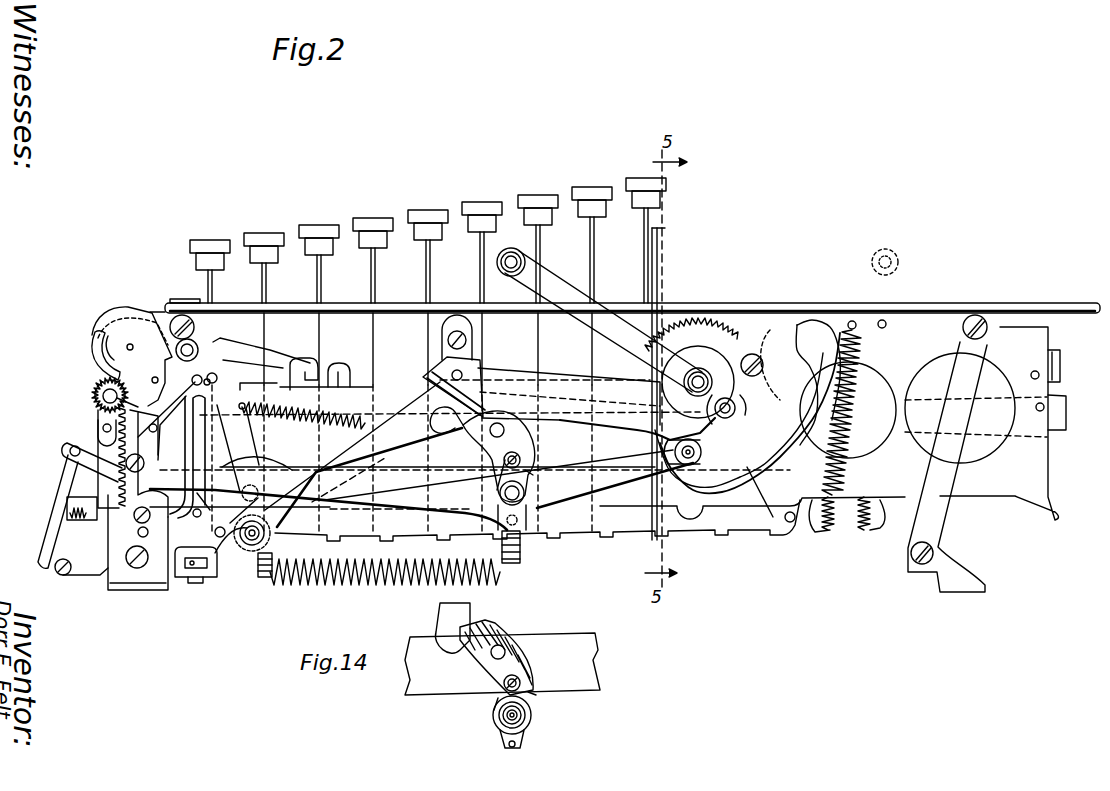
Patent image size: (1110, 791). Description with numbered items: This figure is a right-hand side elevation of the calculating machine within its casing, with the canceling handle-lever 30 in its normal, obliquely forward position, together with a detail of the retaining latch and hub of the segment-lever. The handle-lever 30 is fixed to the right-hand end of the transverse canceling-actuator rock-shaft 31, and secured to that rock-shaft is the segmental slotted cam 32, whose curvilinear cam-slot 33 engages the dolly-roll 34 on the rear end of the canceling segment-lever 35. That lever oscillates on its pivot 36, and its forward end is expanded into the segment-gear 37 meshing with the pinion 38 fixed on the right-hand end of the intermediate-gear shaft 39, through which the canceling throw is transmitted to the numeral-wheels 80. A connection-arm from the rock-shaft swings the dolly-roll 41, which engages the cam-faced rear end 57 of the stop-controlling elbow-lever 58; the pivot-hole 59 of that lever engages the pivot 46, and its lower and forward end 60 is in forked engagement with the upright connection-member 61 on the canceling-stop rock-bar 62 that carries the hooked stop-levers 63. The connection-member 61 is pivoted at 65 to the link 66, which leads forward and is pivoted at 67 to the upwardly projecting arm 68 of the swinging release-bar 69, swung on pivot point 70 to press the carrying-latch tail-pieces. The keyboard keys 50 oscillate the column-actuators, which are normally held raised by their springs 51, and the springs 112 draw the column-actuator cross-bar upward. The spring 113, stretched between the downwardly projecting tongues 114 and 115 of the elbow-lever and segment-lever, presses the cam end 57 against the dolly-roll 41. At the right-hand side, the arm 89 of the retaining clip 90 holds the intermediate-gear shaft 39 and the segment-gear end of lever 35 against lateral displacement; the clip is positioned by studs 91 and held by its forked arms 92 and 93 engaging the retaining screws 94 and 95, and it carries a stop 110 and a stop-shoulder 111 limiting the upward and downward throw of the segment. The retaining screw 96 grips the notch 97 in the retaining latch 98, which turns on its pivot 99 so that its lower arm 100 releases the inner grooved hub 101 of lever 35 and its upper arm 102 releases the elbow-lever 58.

In FIG. 2, the canceling-actuator handle-lever 30 is at (513, 255).
In FIG. 2, the canceling-actuator rock-shaft 31 is at (691, 334).
In FIG. 2, the segmental slotted cam 32 is at (747, 413).
In FIG. 2, the curvilinear cam-slot 33 is at (812, 335).
In FIG. 2, the dolly-roll 34 is at (697, 452).
In FIG. 2, the canceling segment-lever 35 is at (666, 470).
In FIG. 2, the pivot 36 is at (515, 520).
In FIG. 14, the pivot 36 is at (520, 722).
In FIG. 2, the segment-gear 37 is at (120, 407).
In FIG. 2, the pinion 38 is at (97, 388).
In FIG. 2, the intermediate-gear shaft 39 is at (100, 395).
In FIG. 2, the dolly-roll 41 is at (740, 395).
In FIG. 2, the pivot 46 is at (455, 372).
In FIG. 2, the keyboard keys 50 is at (332, 225).
In FIG. 2, the column-actuator springs 51 is at (848, 505).
In FIG. 2, the cam-faced rear end 57 is at (740, 415).
In FIG. 2, the stop-controlling elbow-lever 58 is at (560, 372).
In FIG. 2, the pivot-hole 59 is at (470, 382).
In FIG. 2, the lower and forward end 60 is at (262, 545).
In FIG. 2, the upright connection-member 61 is at (232, 548).
In FIG. 2, the canceling-stop rock-bar 62 is at (193, 568).
In FIG. 2, the hooked stop-levers 63 is at (218, 430).
In FIG. 2, the pivotal connection 65 is at (196, 515).
In FIG. 2, the link 66 is at (190, 502).
In FIG. 2, the pivotal connection 67 is at (92, 462).
In FIG. 2, the upwardly projecting arm 68 is at (62, 470).
In FIG. 2, the swinging release-bar 69 is at (58, 565).
In FIG. 2, the pivot point 70 is at (58, 505).
In FIG. 2, the numeral-wheels 80 is at (96, 345).
In FIG. 2, the arm 89 is at (145, 393).
In FIG. 2, the retaining clip 90 is at (192, 428).
In FIG. 2, the studs 91 is at (174, 466).
In FIG. 2, the forked arm 92 is at (200, 340).
In FIG. 2, the forked arm 93 is at (131, 532).
In FIG. 2, the retaining screw 94 is at (185, 300).
In FIG. 2, the retaining screw 95 is at (132, 520).
In FIG. 2, the retaining screw 96 is at (524, 458).
In FIG. 14, the retaining screw 96 is at (520, 684).
In FIG. 2, the notch 97 is at (505, 460).
In FIG. 14, the notch 97 is at (508, 688).
In FIG. 2, the retaining latch 98 is at (493, 456).
In FIG. 14, the retaining latch 98 is at (492, 657).
In FIG. 2, the pivot 99 is at (505, 430).
In FIG. 14, the pivot 99 is at (506, 652).
In FIG. 2, the lower arm 100 is at (530, 470).
In FIG. 14, the lower arm 100 is at (535, 688).
In FIG. 14, the inner grooved hub 101 is at (533, 716).
In FIG. 2, the upper arm 102 is at (435, 420).
In FIG. 14, the upper arm 102 is at (445, 650).
In FIG. 2, the stop 110 is at (152, 307).
In FIG. 2, the stop-shoulder 111 is at (147, 463).
In FIG. 2, the springs 112 is at (700, 332).
In FIG. 2, the spring 113 is at (352, 587).
In FIG. 2, the tongue / screw-stud 114 is at (754, 356).
In FIG. 2, the tongue / stop-arm 115 is at (658, 322).